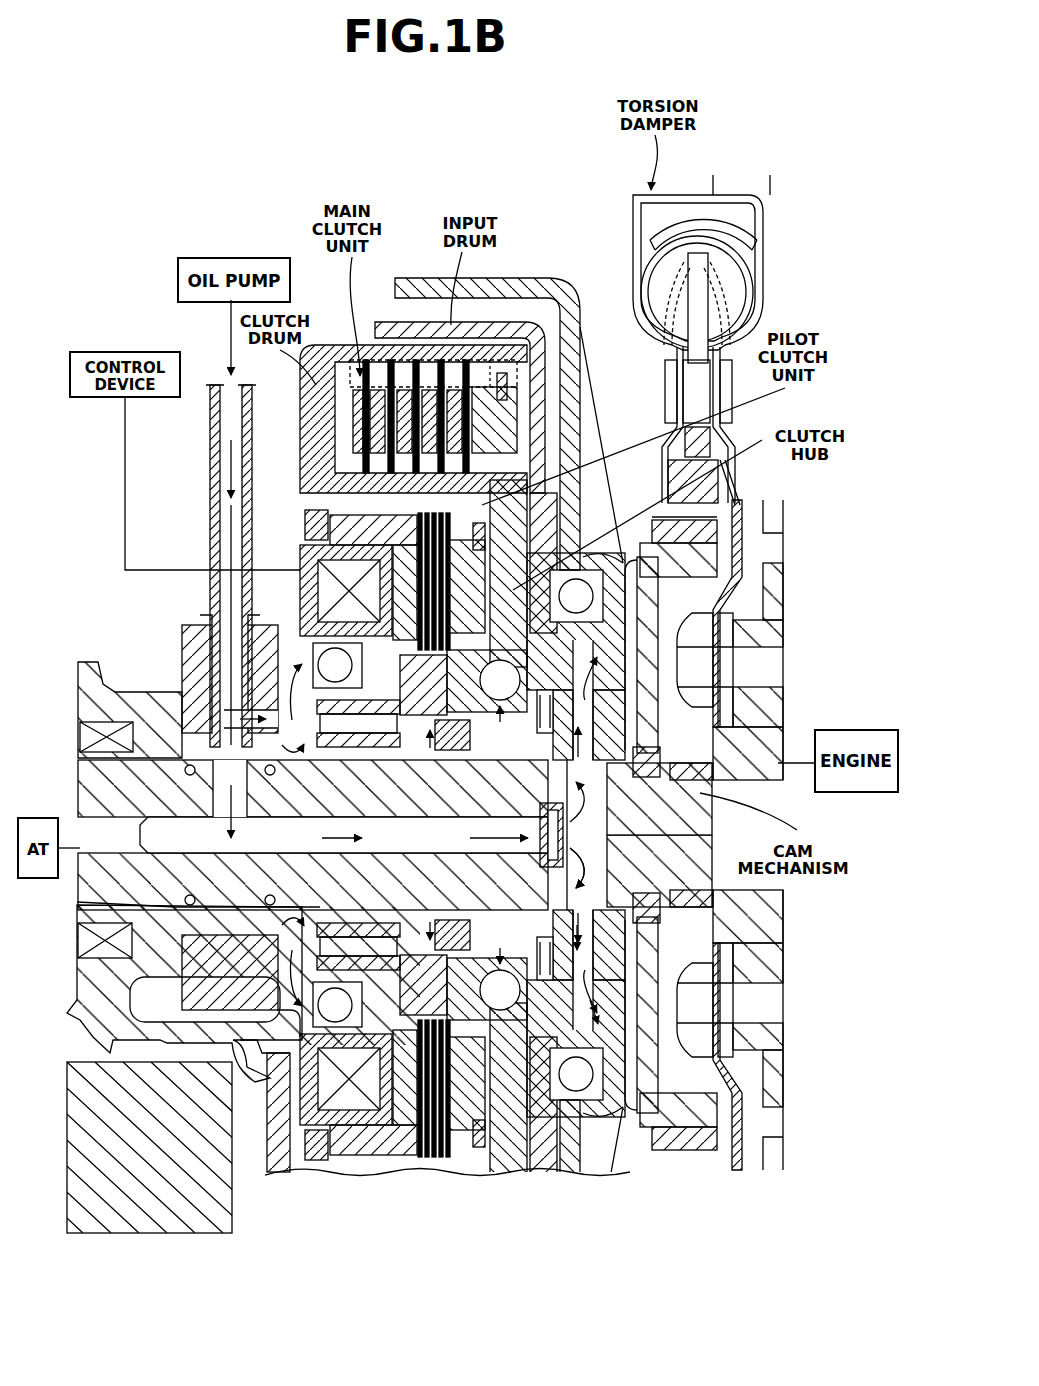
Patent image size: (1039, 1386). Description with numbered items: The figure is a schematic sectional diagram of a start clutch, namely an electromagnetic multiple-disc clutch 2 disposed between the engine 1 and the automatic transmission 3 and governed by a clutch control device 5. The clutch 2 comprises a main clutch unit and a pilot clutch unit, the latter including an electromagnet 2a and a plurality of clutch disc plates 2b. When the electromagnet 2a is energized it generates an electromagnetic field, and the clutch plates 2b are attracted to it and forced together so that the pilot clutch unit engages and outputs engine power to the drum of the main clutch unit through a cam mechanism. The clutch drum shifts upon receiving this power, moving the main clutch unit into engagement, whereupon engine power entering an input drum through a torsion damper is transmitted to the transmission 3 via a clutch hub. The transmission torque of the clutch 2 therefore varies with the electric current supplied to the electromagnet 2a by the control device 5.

The engine 1 is at (852, 792).
The electromagnetic multiple-disc clutch 2 is at (289, 446).
The electromagnet 2a is at (305, 562).
The clutch disc plates 2b is at (454, 567).
The automatic transmission 3 is at (35, 878).
The clutch control device 5 is at (140, 397).